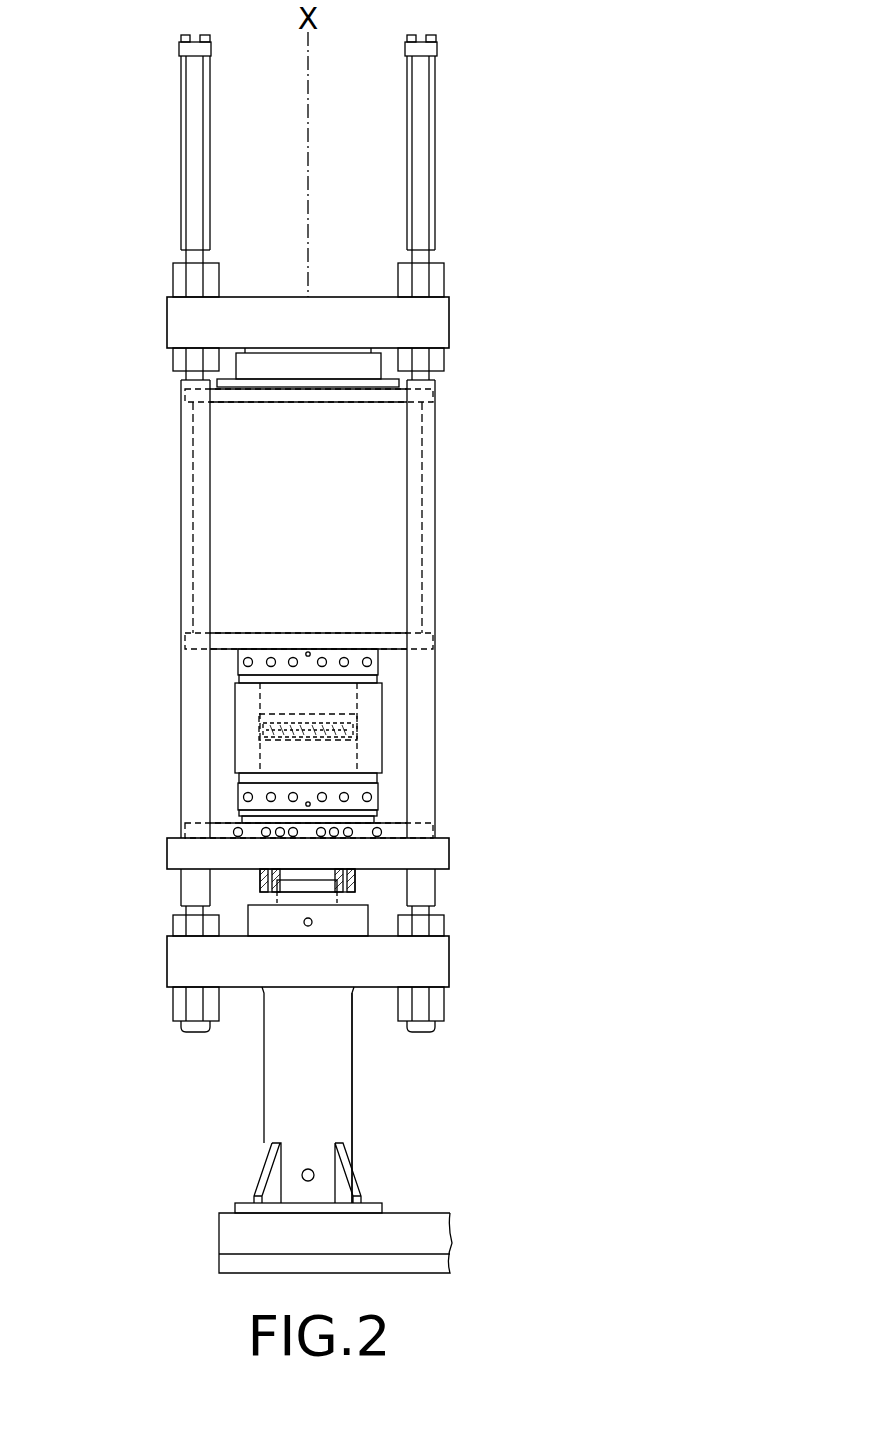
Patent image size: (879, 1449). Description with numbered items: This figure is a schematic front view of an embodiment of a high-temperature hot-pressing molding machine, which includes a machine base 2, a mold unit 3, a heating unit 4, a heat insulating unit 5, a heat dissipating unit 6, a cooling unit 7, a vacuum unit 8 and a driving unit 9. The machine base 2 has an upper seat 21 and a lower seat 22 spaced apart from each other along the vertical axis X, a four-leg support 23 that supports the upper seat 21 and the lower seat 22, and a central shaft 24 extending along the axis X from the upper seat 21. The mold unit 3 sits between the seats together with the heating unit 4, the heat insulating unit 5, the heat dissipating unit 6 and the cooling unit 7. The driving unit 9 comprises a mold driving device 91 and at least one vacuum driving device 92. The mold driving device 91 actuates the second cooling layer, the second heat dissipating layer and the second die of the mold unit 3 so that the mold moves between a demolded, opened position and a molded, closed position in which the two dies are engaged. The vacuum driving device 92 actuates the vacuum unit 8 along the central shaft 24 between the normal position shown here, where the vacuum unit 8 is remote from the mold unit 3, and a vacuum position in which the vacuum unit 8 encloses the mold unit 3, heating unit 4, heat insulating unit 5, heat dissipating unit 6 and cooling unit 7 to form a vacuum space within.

The machine base 2 is at (452, 837).
The mold unit 3 is at (355, 720).
The heating unit 4 is at (358, 753).
The heat insulating unit 5 is at (235, 727).
The heat dissipating unit 6 is at (235, 677).
The cooling unit 7 is at (380, 665).
The vacuum unit 8 is at (380, 483).
The driving unit 9 is at (293, 1130).
The upper seat 21 is at (167, 320).
The lower seat 22 is at (167, 958).
The four-leg support 23 is at (178, 530).
The central shaft 24 is at (340, 353).
The mold driving device 91 is at (355, 1097).
The vacuum driving device 92 is at (423, 93).